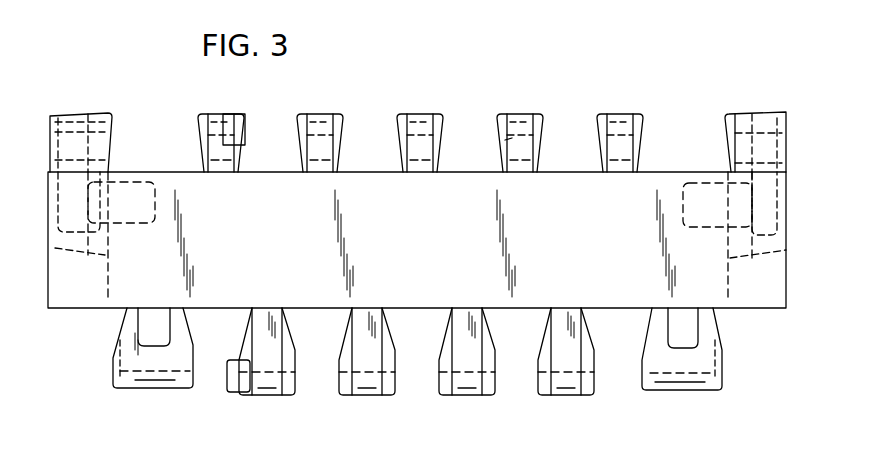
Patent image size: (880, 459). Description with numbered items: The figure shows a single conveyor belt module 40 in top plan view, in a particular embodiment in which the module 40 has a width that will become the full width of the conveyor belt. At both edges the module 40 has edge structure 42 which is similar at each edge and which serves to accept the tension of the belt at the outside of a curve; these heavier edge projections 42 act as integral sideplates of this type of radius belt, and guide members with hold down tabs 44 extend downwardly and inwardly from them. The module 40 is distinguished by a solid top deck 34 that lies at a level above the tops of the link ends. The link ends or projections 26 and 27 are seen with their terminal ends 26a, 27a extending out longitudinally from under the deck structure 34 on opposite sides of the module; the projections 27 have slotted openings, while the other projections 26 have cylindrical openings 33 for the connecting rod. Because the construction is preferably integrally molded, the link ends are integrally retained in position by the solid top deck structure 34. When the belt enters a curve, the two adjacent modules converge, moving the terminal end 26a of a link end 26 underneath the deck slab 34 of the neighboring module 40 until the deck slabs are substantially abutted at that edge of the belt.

The link end projection 26 is at (420, 115).
The terminal end 26a is at (88, 116).
The slotted link end projection 27 is at (262, 393).
The terminal end 27a is at (155, 391).
The cylindrical opening 33 is at (505, 140).
The solid top deck 34 is at (383, 243).
The module 40 is at (673, 89).
The edge structure 42 is at (72, 107).
The hold down tab 44 is at (145, 175).